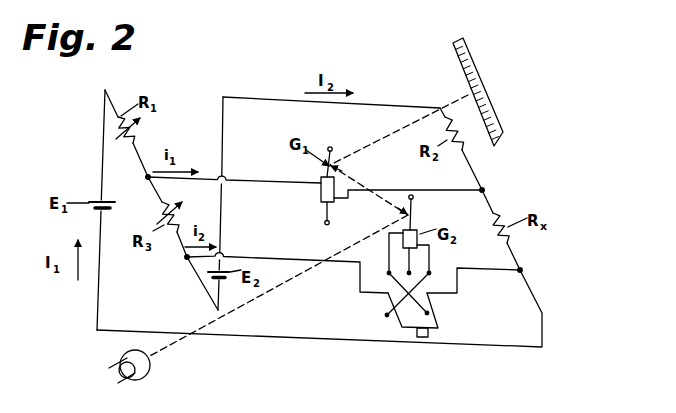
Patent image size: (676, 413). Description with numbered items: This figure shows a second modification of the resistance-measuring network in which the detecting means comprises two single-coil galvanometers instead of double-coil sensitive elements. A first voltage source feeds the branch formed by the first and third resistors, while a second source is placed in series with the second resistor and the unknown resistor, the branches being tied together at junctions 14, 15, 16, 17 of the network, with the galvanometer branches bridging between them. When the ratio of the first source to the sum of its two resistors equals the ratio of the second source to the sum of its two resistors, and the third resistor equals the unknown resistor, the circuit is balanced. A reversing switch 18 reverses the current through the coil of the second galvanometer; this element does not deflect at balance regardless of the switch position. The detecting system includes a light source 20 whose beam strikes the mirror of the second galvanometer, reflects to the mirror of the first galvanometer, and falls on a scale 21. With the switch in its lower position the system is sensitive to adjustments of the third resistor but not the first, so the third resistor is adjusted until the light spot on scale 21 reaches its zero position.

The junction node between R1 and R3 14 is at (147, 176).
The junction node between R2 and Rx 15 is at (483, 189).
The junction node at R3 and E2 branch 16 is at (186, 258).
The junction node at Rx and relay 17 is at (522, 269).
The reversing switch 18 is at (433, 308).
The light source 20 is at (148, 368).
The scale 21 is at (487, 102).